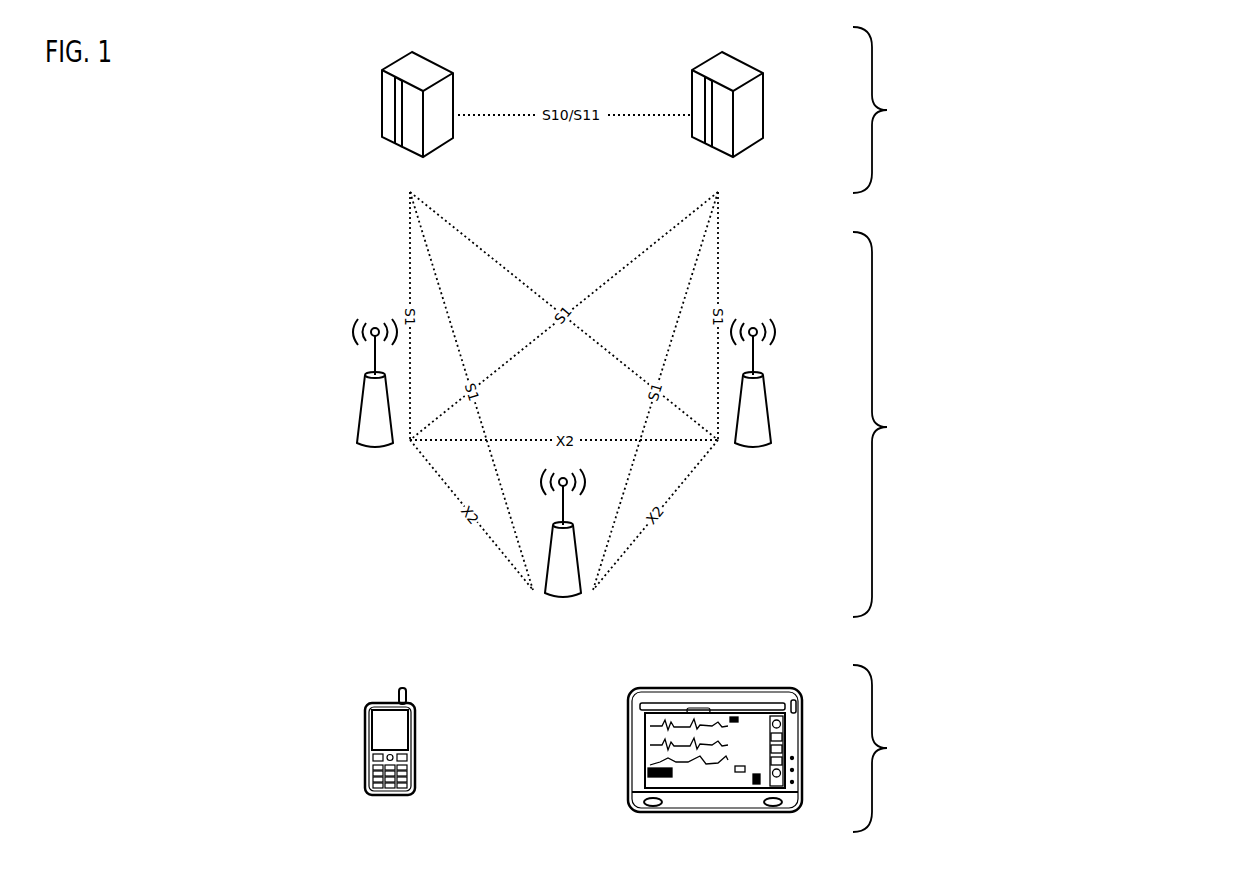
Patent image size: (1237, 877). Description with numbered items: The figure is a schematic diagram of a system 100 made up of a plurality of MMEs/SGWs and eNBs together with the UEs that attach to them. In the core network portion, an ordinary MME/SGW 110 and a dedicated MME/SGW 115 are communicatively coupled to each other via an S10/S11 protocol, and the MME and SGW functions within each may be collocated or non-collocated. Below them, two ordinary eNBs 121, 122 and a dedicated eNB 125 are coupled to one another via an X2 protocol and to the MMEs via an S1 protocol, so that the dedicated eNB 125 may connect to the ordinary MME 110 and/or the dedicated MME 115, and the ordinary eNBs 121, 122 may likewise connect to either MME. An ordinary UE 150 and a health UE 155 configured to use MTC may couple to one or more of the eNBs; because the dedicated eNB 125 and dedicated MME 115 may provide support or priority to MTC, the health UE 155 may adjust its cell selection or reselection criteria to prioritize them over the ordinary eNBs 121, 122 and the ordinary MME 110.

The system 100 is at (1132, 63).
The ordinary MME/SGW 110 is at (455, 73).
The dedicated MME/SGW 115 is at (765, 73).
The ordinary eNB 121 is at (362, 390).
The ordinary eNB 122 is at (768, 390).
The dedicated eNB 125 is at (552, 535).
The ordinary UE 150 is at (368, 703).
The health UE 155 is at (688, 688).